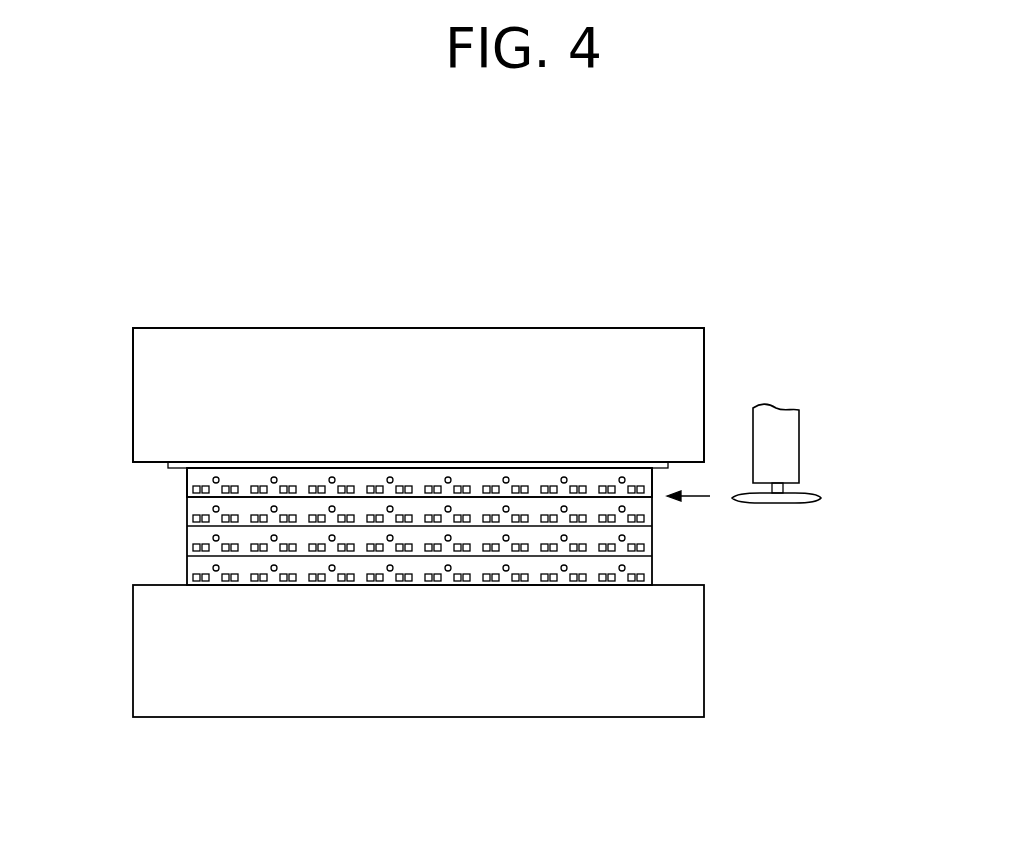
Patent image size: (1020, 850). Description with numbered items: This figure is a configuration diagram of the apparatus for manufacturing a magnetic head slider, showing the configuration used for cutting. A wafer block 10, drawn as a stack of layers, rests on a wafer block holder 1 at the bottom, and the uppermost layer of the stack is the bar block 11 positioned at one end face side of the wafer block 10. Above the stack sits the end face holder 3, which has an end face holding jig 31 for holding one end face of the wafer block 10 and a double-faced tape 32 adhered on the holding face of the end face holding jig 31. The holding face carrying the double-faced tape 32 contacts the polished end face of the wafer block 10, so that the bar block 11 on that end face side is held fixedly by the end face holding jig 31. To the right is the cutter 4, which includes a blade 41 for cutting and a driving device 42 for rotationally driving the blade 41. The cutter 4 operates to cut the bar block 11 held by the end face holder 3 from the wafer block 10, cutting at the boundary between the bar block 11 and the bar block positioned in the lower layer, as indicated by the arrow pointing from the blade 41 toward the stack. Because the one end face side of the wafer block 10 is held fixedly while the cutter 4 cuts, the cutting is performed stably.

The wafer block holder 1 is at (705, 680).
The end face holder 3 is at (611, 310).
The end face holding jig 31 is at (133, 370).
The double-faced tape 32 is at (177, 469).
The wafer block 10 is at (355, 536).
The bar block 11 is at (186, 490).
The cutter 4 is at (788, 459).
The blade 41 is at (803, 504).
The driving device 42 is at (800, 446).